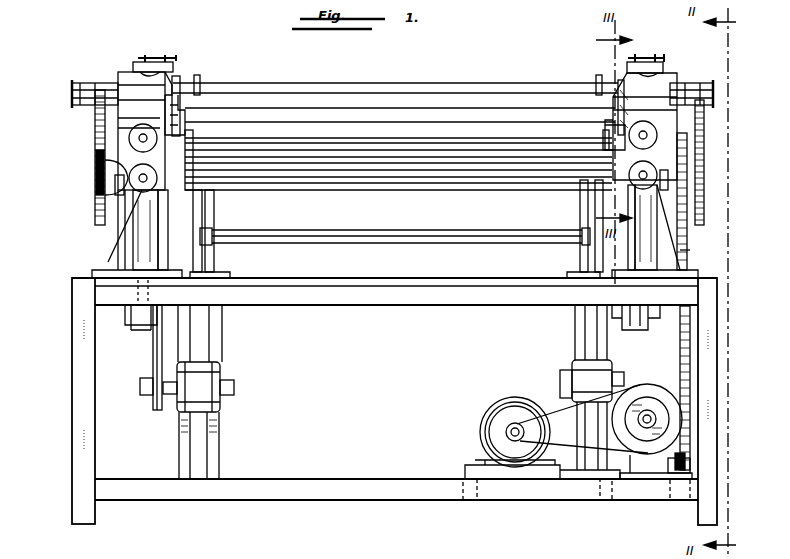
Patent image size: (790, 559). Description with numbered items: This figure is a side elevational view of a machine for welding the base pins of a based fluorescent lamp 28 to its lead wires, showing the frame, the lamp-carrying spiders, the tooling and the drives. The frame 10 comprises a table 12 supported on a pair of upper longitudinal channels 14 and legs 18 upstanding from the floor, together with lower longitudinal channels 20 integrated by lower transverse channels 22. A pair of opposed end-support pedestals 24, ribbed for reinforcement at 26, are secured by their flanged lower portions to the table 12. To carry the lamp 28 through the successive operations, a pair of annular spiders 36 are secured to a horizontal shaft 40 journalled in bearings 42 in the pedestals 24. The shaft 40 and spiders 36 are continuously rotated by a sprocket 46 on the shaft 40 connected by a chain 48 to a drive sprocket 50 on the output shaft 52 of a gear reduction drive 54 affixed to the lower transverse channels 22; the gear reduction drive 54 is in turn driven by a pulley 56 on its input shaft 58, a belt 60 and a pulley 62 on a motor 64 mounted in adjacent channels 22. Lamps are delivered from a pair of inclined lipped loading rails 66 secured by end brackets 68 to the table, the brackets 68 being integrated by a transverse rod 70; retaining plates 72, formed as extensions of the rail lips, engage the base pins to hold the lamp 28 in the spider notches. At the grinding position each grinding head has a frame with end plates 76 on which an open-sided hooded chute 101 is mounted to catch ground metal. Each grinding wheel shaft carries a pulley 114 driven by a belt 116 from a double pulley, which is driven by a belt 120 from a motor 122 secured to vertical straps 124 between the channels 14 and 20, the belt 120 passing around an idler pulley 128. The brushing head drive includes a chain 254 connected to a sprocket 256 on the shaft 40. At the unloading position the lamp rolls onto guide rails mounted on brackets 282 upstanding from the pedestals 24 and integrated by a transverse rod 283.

The frame 10 is at (376, 393).
The table 12 is at (410, 278).
The upper longitudinal channels 14 is at (462, 305).
The legs 18 is at (88, 450).
The lower longitudinal channels 20 is at (318, 496).
The lower transverse channels 22 is at (478, 500).
The end-support pedestals 24 is at (145, 240).
The ribs 26 is at (110, 262).
The based fluorescent lamp 28 is at (495, 128).
The annular spiders 36 is at (200, 74).
The horizontal shaft 40 is at (124, 176).
The bearings 42 is at (118, 193).
The sprocket 46 is at (684, 232).
The chain 48 is at (680, 352).
The drive sprocket 50 is at (663, 478).
The output shaft 52 is at (692, 440).
The gear reduction drive 54 is at (628, 480).
The pulley 56 is at (655, 392).
The input shaft 58 is at (582, 414).
The belt 60 is at (552, 405).
The pulley 62 is at (492, 429).
The motor 64 is at (497, 410).
The loading rails 66 is at (190, 118).
The end brackets 68 is at (152, 222).
The transverse rod 70 is at (395, 139).
The retaining plates 72 is at (178, 95).
The end plates 76 is at (125, 118).
The hooded chute 101 is at (128, 70).
The pulley 114 is at (128, 142).
The belt 116 is at (128, 180).
The belt 120 is at (155, 360).
The motor 122 is at (205, 376).
The vertical straps 124 is at (212, 452).
The idler pulley 128 is at (145, 322).
The chain 254 is at (100, 140).
The sprocket 256 is at (98, 222).
The brackets 282 is at (214, 266).
The transverse rod 283 is at (396, 268).